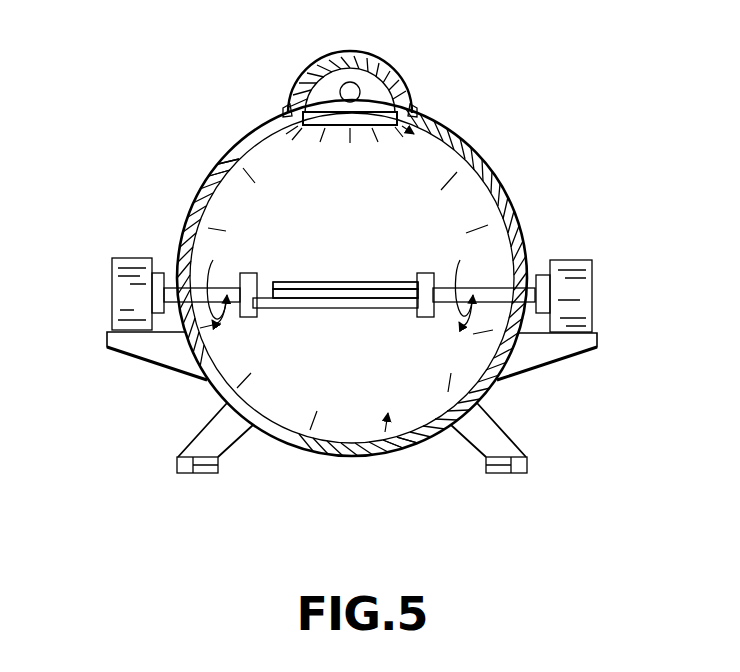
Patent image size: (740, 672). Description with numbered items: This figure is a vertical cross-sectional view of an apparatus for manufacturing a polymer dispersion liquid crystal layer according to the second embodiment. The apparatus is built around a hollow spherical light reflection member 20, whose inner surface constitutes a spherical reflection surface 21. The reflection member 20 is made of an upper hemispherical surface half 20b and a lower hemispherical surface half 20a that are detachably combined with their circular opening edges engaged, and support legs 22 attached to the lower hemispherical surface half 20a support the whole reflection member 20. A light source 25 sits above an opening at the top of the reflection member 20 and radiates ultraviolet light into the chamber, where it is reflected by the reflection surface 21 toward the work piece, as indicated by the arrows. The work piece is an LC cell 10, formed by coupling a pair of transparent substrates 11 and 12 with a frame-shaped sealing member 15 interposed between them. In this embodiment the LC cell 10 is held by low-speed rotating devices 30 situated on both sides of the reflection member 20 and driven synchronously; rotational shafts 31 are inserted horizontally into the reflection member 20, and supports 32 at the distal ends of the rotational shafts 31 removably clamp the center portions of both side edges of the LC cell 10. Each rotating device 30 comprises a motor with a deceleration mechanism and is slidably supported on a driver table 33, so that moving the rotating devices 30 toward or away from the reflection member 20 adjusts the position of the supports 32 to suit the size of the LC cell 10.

The LC cell 10 is at (366, 276).
The transparent substrate 11 is at (295, 280).
The transparent substrate 12 is at (356, 309).
The sealing member 15 is at (400, 292).
The reflection member 20 is at (452, 122).
The lower hemispherical surface half 20a is at (278, 443).
The upper hemispherical surface half 20b is at (473, 163).
The spherical reflection surface 21 is at (218, 176).
The support leg 22 is at (185, 456).
The light source 25 is at (393, 72).
The low-speed rotating device 30 is at (112, 297).
The rotational shaft 31 is at (205, 258).
The support 32 is at (247, 315).
The driver table 33 is at (132, 345).